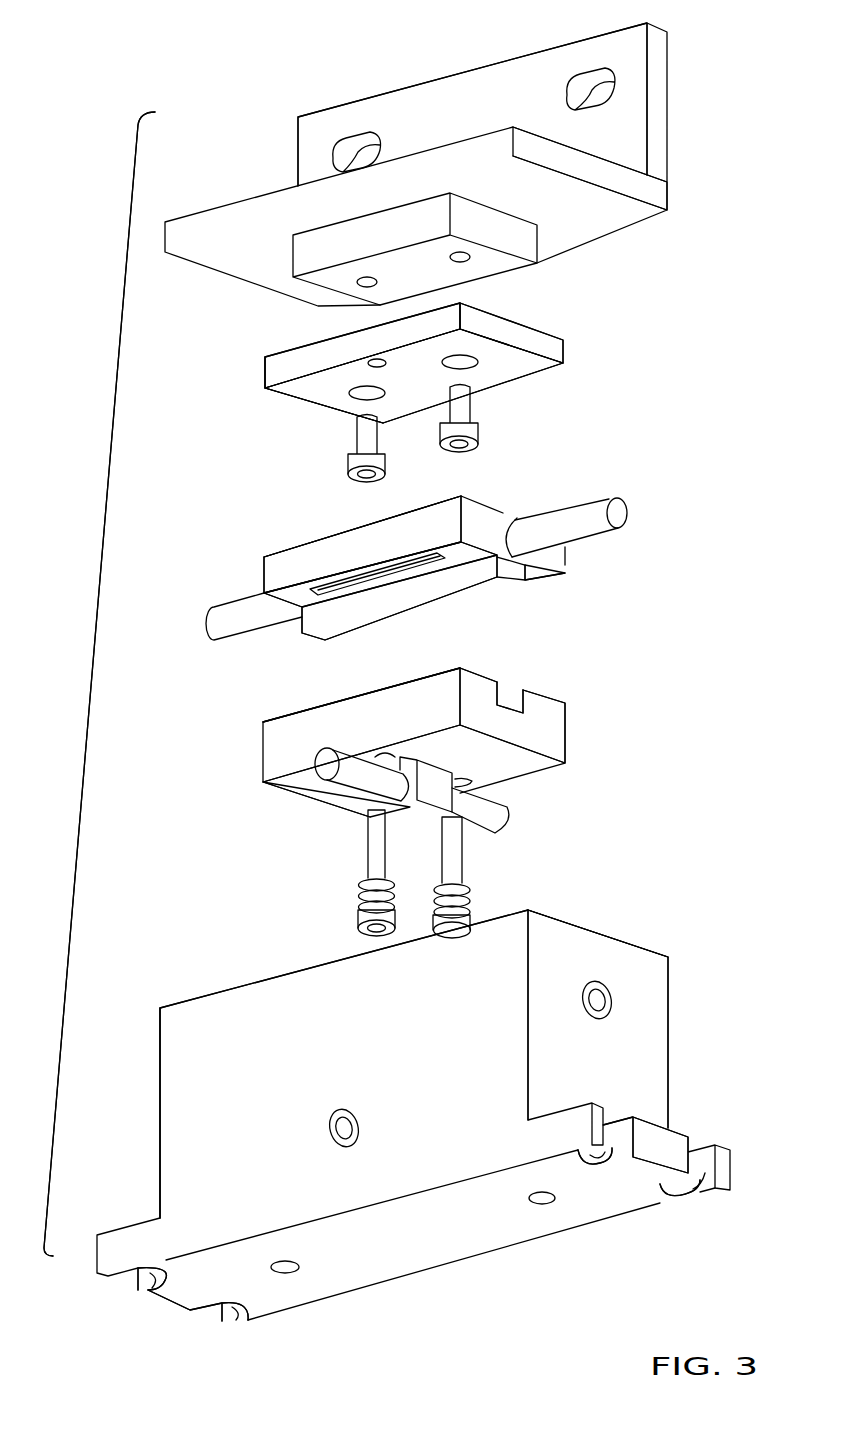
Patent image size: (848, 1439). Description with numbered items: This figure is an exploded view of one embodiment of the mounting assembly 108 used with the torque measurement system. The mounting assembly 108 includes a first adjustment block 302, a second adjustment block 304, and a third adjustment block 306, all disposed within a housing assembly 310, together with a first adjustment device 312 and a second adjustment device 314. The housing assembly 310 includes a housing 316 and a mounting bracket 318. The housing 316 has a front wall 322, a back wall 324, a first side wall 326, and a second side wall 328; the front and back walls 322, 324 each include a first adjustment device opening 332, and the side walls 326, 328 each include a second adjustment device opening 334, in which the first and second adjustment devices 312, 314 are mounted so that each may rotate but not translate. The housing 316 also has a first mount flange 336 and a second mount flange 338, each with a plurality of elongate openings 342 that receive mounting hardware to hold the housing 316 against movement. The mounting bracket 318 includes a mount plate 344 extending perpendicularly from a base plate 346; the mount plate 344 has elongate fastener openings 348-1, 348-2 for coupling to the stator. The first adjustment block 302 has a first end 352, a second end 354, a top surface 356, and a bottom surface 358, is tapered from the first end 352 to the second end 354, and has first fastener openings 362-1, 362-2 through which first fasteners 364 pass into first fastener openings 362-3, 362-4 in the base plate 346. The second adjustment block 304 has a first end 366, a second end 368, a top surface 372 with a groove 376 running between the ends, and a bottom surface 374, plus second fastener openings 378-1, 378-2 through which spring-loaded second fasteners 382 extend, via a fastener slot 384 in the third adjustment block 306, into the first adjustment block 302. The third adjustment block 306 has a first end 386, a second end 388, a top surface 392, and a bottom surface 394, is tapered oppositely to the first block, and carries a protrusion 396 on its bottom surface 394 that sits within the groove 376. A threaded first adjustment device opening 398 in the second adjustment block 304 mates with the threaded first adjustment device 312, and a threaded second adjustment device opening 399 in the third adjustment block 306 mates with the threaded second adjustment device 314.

The mounting assembly 108 is at (93, 88).
The housing assembly 310 is at (95, 620).
The mounting bracket 318 is at (657, 90).
The mount plate 344 is at (342, 115).
The base plate 346 is at (590, 172).
The elongate fastener opening 348-1 is at (575, 92).
The elongate fastener opening 348-2 is at (360, 153).
The first fastener opening 362-3 is at (468, 264).
The first fastener opening 362-4 is at (360, 290).
The first adjustment block 302 is at (578, 353).
The first end 352 is at (280, 400).
The second end 354 is at (547, 340).
The top surface 356 is at (265, 357).
The bottom surface 358 is at (537, 362).
The first fastener opening 362-1 is at (468, 367).
The first fastener opening 362-2 is at (360, 393).
The first fastener 364 is at (345, 472).
The third adjustment block 306 is at (577, 580).
The first end 386 is at (262, 565).
The top surface 392 is at (307, 543).
The bottom surface 394 is at (465, 552).
The fastener slot 384 is at (340, 590).
The second end 388 is at (565, 566).
The protrusion 396 is at (518, 580).
The second adjustment device 314 is at (596, 507).
The second adjustment device opening 399 is at (502, 532).
The second adjustment block 304 is at (570, 732).
The first end 366 is at (262, 750).
The top surface 372 is at (377, 690).
The second end 368 is at (547, 712).
The groove 376 is at (514, 699).
The bottom surface 374 is at (300, 783).
The second fastener opening 378-1 is at (378, 757).
The second fastener opening 378-2 is at (460, 782).
The first adjustment device 312 is at (507, 822).
The first adjustment device opening 398 is at (405, 797).
The spring-loaded second fastener 382 is at (368, 847).
The housing 316 is at (660, 1051).
The front wall 322 is at (208, 1003).
The back wall 324 is at (670, 970).
The second side wall 328 is at (558, 922).
The first side wall 326 is at (160, 1128).
The first adjustment device opening 332 is at (340, 1133).
The second adjustment device opening 334 is at (597, 988).
The first mount flange 336 is at (678, 1136).
The second mount flange 338 is at (175, 1308).
The elongate opening 342 is at (152, 1283).